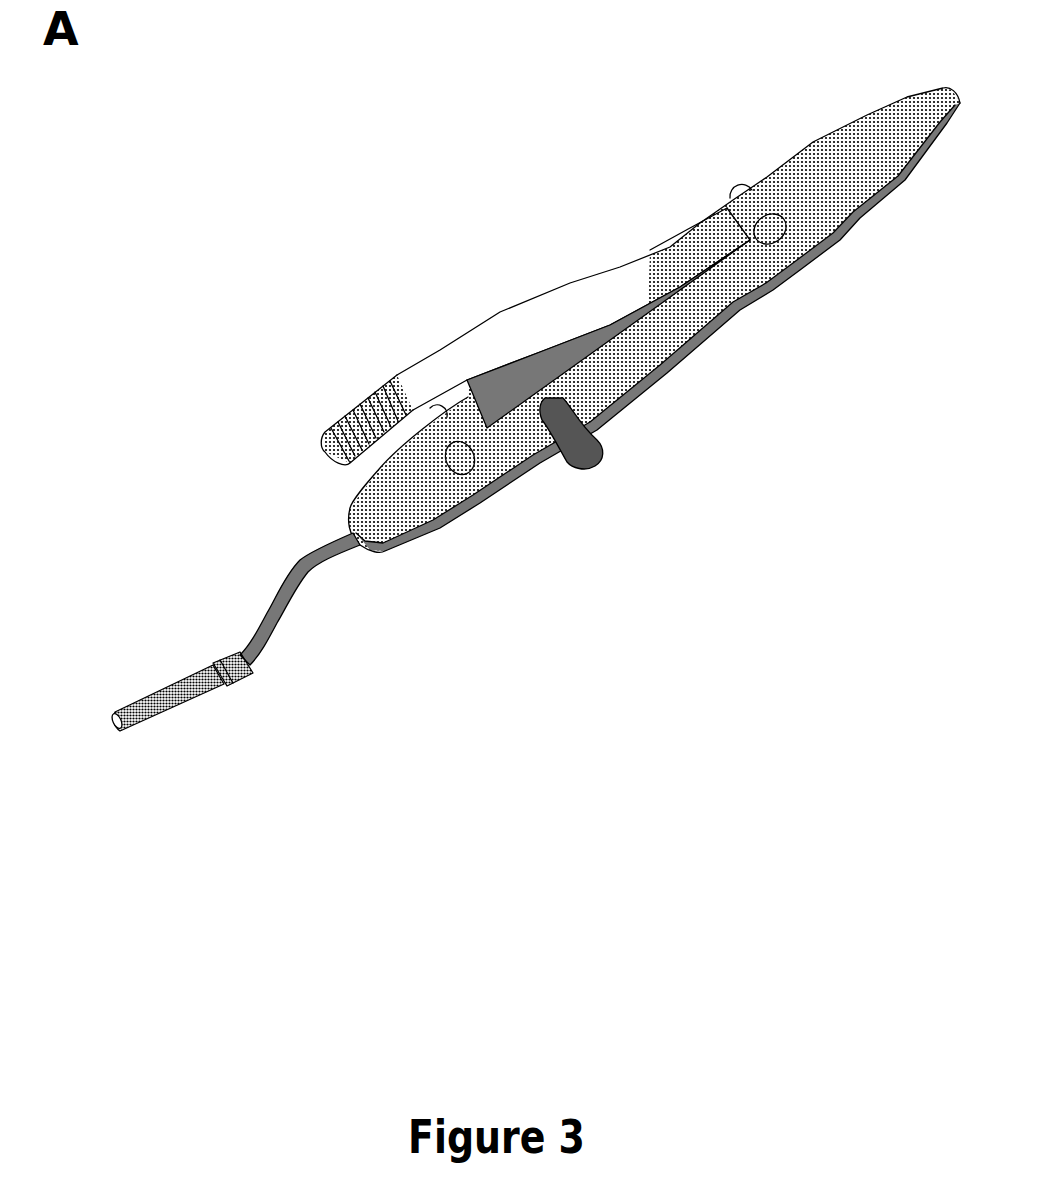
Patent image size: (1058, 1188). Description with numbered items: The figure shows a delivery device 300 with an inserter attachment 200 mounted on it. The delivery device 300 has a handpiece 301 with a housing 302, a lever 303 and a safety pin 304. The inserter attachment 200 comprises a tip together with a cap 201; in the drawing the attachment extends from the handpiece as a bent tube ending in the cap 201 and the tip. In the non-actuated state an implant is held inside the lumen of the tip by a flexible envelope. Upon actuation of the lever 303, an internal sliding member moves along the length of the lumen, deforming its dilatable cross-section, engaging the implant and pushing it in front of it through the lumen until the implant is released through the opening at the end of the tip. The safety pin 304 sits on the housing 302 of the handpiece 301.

The delivery device 300 is at (508, 237).
The handpiece 301 is at (813, 141).
The housing 302 is at (480, 515).
The lever 303 is at (445, 350).
The safety pin 304 is at (605, 445).
The inserter attachment 200 is at (206, 592).
The cap 201 is at (193, 702).